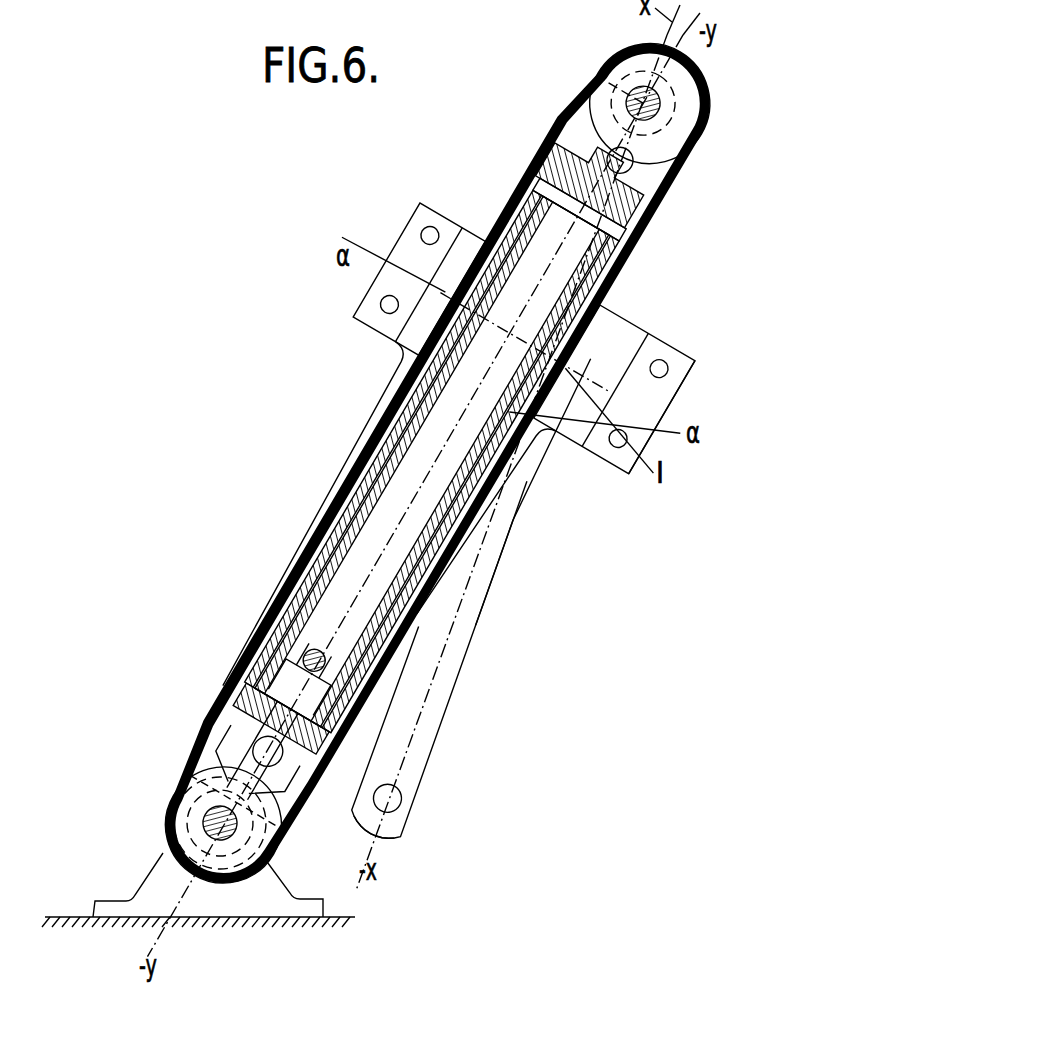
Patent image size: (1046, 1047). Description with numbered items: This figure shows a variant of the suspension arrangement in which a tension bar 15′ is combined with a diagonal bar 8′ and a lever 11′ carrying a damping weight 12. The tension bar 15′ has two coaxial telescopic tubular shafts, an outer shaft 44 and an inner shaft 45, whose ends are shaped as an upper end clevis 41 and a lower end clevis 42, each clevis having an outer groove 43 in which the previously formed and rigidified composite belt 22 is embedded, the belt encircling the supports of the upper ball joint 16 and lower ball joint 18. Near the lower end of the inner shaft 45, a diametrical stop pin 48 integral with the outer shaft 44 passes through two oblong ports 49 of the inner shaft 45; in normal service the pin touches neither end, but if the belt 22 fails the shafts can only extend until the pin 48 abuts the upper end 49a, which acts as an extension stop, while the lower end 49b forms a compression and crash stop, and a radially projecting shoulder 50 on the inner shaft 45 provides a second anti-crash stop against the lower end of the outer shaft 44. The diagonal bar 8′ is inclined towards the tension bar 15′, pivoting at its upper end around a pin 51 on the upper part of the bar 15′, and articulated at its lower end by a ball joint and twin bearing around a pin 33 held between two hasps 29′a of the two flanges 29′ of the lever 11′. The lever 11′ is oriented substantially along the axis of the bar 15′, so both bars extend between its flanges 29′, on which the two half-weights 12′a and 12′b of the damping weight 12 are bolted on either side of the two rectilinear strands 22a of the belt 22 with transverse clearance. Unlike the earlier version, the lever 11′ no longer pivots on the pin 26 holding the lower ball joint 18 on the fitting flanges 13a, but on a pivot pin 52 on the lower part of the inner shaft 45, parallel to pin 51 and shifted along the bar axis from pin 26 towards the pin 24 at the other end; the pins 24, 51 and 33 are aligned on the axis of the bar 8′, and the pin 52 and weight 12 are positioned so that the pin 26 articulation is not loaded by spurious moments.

The diagonal bar 8′ is at (486, 608).
The lever 11′ is at (383, 378).
The damping weight 12 is at (613, 468).
The half-weight 12′a is at (412, 242).
The half-weight 12′b is at (676, 362).
The fitting flanges 13a is at (160, 880).
The tension bar 15′ is at (380, 433).
The upper end ball joint 16 is at (600, 90).
The lower end ball joint 18 is at (190, 793).
The composite belt 22 is at (298, 577).
The rectilinear strands 22a is at (548, 188).
The pin 24 is at (660, 112).
The pin 26 is at (237, 833).
The flanges 29′ is at (395, 678).
The hasps 29′a is at (418, 822).
The pin 33 is at (395, 797).
The upper end clevis 41 is at (624, 62).
The lower end clevis 42 is at (223, 865).
The outer groove 43 is at (700, 72).
The tubular outer shaft 44 is at (592, 135).
The inner tubular shaft 45 is at (237, 750).
The stop pin 48 is at (292, 655).
The oblong ports 49 is at (326, 658).
The upper end of the oblong ports 49a is at (320, 645).
The lower end of the oblong ports 49b is at (296, 668).
The shoulder 50 is at (262, 700).
The pin 51 is at (632, 164).
The pivot pin 52 is at (277, 772).